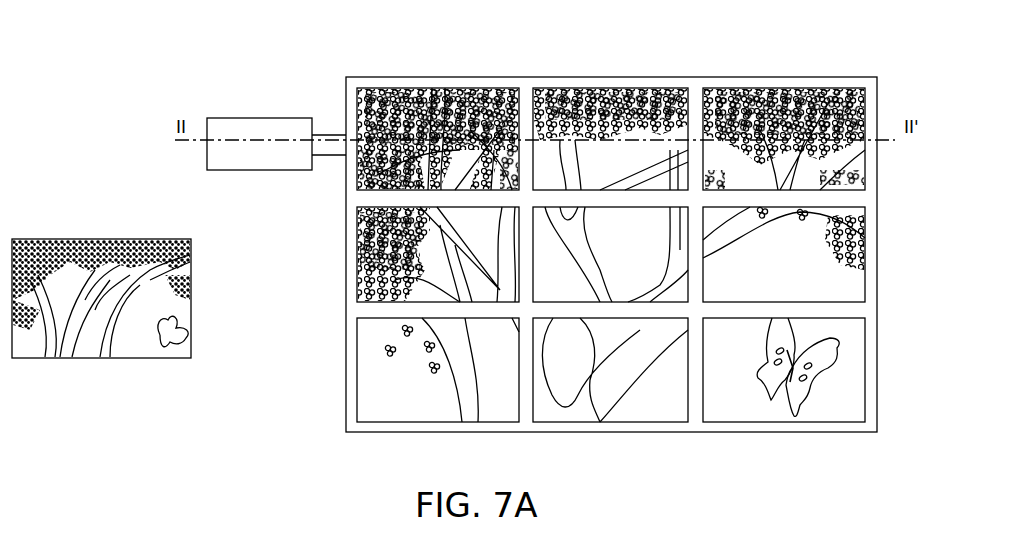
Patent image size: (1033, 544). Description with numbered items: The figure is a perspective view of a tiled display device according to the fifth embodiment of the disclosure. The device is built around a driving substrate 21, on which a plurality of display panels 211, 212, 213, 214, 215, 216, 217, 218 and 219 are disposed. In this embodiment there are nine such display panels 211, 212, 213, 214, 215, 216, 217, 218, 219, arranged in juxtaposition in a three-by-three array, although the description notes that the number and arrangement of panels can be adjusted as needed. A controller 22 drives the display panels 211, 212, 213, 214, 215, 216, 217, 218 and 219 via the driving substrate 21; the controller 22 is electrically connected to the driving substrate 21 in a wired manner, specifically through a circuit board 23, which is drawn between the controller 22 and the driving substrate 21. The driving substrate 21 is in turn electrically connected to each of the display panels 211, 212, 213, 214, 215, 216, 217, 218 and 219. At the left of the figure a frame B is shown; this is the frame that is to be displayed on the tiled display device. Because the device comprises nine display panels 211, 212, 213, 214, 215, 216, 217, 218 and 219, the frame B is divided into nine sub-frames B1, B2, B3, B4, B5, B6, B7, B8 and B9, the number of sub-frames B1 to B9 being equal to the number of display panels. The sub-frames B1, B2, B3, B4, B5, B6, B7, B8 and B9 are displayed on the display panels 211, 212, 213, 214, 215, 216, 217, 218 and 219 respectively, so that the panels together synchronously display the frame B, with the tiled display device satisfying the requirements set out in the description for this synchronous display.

The driving substrate 21 is at (877, 192).
The controller 22 is at (258, 118).
The circuit board 23 is at (326, 135).
The display panel 211 is at (438, 111).
The display panel 212 is at (610, 111).
The display panel 213 is at (784, 111).
The display panel 214 is at (816, 254).
The display panel 215 is at (610, 392).
The display panel 216 is at (405, 254).
The display panel 217 is at (405, 370).
The display panel 218 is at (610, 337).
The display panel 219 is at (784, 392).
The frame B is at (98, 358).
The sub-frame B1 is at (487, 90).
The sub-frame B2 is at (652, 90).
The sub-frame B3 is at (820, 90).
The sub-frame B4 is at (862, 234).
The sub-frame B5 is at (585, 405).
The sub-frame B6 is at (365, 235).
The sub-frame B7 is at (368, 360).
The sub-frame B8 is at (660, 410).
The sub-frame B9 is at (817, 410).